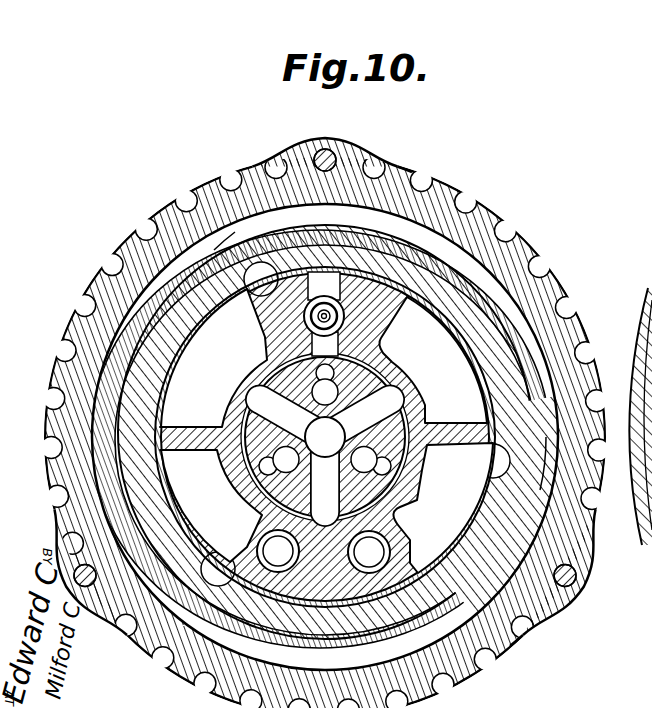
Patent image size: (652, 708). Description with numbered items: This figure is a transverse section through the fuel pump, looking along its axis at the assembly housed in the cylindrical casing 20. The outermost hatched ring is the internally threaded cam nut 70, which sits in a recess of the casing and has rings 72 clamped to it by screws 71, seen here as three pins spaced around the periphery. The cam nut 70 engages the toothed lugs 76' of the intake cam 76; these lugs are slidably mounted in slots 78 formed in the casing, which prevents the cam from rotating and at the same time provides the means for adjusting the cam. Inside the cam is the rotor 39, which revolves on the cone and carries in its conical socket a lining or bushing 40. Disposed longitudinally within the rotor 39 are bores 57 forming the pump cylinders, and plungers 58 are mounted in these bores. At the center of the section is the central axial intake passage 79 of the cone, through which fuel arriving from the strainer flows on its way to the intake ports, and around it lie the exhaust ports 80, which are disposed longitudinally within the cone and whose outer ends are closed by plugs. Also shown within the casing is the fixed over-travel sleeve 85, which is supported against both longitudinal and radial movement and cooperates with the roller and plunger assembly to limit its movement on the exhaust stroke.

The cylindrical casing 20 is at (397, 232).
The rotor 39 is at (378, 314).
The lining or bushing 40 is at (397, 398).
The bores 57 is at (267, 346).
The plungers 58 is at (280, 355).
The cam nut 70 is at (165, 228).
The screws 71 is at (335, 155).
The ring 72 is at (306, 152).
The intake cam 76 is at (325, 419).
The toothed lugs 76' is at (407, 316).
The slots 78 is at (293, 165).
The central axial intake passage 79 is at (325, 437).
The exhaust ports 80 is at (345, 388).
The fixed over-travel sleeve 85 is at (494, 478).